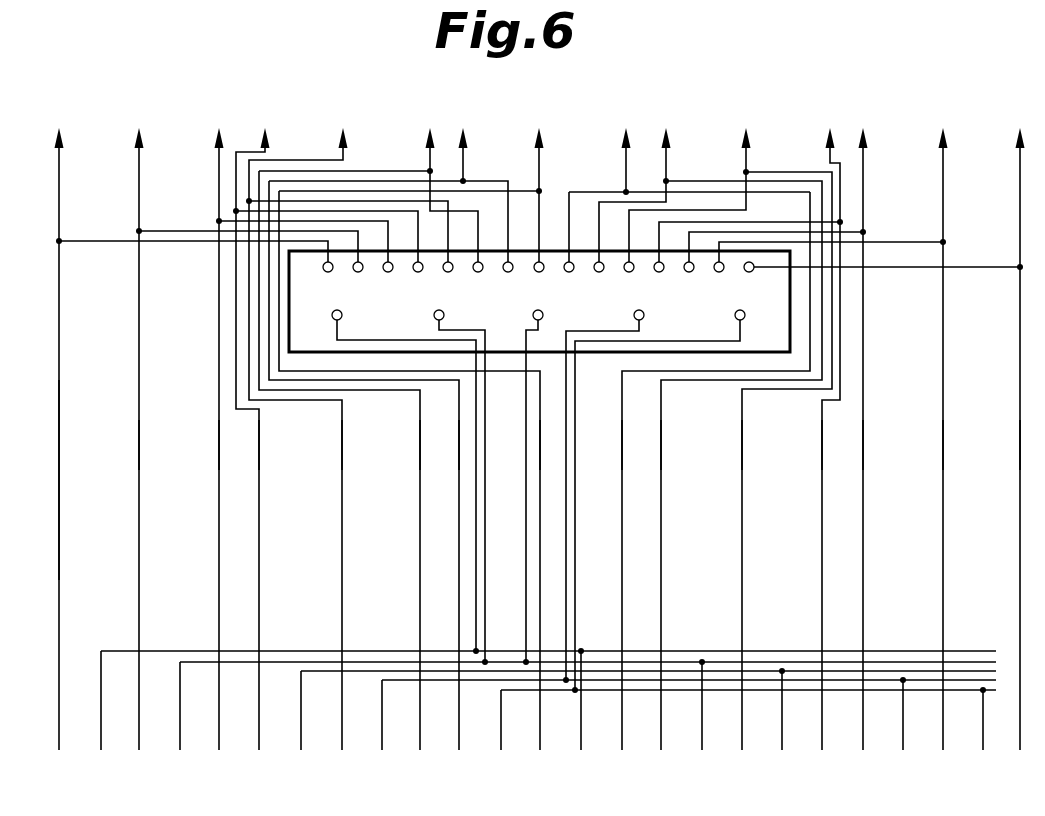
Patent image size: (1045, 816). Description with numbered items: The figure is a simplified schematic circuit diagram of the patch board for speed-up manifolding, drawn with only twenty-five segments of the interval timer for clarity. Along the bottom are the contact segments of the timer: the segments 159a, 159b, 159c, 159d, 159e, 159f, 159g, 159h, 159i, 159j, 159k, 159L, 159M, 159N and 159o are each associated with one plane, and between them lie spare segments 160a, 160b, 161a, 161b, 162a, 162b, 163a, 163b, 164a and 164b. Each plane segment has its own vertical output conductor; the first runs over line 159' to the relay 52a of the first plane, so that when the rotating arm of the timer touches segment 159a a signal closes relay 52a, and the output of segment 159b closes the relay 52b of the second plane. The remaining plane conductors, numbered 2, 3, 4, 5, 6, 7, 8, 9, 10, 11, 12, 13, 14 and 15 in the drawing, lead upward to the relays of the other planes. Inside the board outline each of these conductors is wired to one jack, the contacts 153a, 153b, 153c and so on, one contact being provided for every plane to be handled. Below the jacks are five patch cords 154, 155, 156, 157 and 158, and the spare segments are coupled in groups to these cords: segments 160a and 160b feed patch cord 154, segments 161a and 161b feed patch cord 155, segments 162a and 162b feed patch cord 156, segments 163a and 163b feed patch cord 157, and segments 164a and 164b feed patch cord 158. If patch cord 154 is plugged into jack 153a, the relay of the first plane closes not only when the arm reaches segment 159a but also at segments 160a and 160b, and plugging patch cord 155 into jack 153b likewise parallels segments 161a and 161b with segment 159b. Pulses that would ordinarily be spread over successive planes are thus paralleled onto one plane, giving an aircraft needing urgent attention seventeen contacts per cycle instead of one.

The relay 52a is at (61, 121).
The relay 52b is at (141, 121).
The contact 153a is at (324, 271).
The contact 153b is at (354, 271).
The contact 153c is at (392, 271).
The patch cord 154 is at (332, 312).
The patch cord 155 is at (434, 315).
The patch cord 156 is at (533, 315).
The patch cord 157 is at (634, 315).
The patch cord 158 is at (735, 315).
The line 159' is at (31, 486).
The contact segment 159a is at (61, 457).
The contact segment 159b is at (142, 457).
The contact segment 159c is at (222, 448).
The contact segment 159d is at (257, 448).
The contact segment 159e is at (304, 448).
The contact segment 159f is at (368, 448).
The contact segment 159g is at (388, 448).
The contact segment 159h is at (418, 448).
The contact segment 159i is at (689, 448).
The contact segment 159j is at (710, 448).
The contact segment 159k is at (730, 448).
The contact segment 159L is at (749, 448).
The contact segment 159M is at (786, 448).
The contact segment 159N is at (840, 448).
The contact segment 159o is at (895, 448).
The spare segment 160a is at (542, 710).
The spare segment 160b is at (583, 708).
The spare segment 161a is at (581, 715).
The spare segment 161b is at (704, 714).
The spare segment 162a is at (642, 720).
The spare segment 162b is at (784, 718).
The spare segment 163a is at (682, 724).
The spare segment 163b is at (905, 723).
The spare segment 164a is at (742, 729).
The spare segment 164b is at (985, 728).
The conductor 2 is at (131, 445).
The conductor 3 is at (211, 445).
The conductor 4 is at (251, 445).
The conductor 5 is at (333, 445).
The conductor 6 is at (411, 445).
The conductor 7 is at (451, 445).
The conductor 8 is at (533, 445).
The conductor 9 is at (614, 445).
The conductor 10 is at (650, 445).
The conductor 11 is at (731, 445).
The conductor 12 is at (810, 445).
The conductor 13 is at (852, 445).
The conductor 14 is at (931, 445).
The conductor 15 is at (1010, 445).